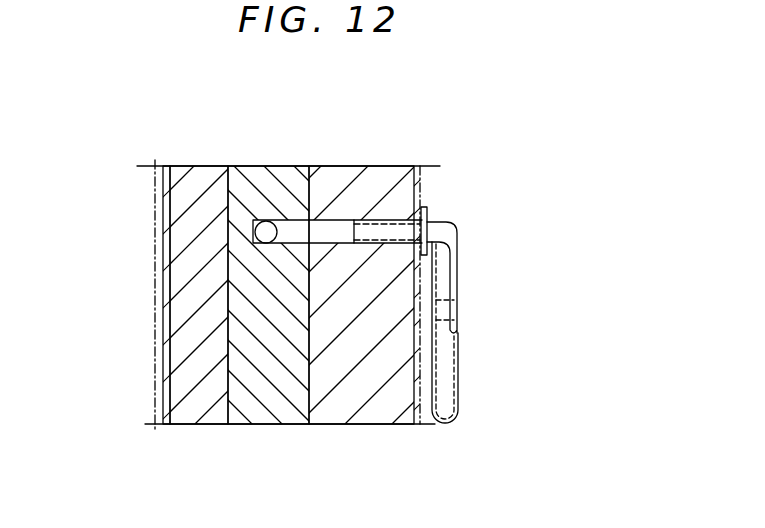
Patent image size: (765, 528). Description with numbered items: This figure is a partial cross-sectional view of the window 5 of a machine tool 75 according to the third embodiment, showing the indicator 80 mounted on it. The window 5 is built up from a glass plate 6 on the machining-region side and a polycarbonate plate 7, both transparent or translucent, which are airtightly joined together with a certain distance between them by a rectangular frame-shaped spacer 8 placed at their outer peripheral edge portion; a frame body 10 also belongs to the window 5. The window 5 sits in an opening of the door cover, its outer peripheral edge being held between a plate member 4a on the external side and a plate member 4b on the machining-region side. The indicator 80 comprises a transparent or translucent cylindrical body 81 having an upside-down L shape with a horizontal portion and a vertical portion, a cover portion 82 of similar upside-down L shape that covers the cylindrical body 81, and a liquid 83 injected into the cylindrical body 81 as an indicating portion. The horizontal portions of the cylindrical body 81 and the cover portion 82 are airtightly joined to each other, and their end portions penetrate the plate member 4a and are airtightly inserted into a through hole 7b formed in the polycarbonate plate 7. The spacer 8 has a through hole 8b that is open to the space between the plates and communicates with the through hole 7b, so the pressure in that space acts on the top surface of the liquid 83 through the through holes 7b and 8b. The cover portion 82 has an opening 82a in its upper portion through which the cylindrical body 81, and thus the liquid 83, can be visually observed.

The window 5 is at (329, 310).
The plate member 4a is at (420, 424).
The plate member 4b is at (155, 385).
The frame body 10 is at (164, 424).
The glass plate 6 is at (186, 424).
The spacer 8 is at (276, 308).
The through hole 8b is at (293, 226).
The polycarbonate plate 7 is at (356, 308).
The through hole 7b is at (336, 226).
The machine tool 75 is at (617, 219).
The indicator 80 is at (502, 320).
The cylindrical body 81 is at (430, 262).
The cover portion 82 is at (457, 392).
The opening 82a is at (462, 287).
The liquid 83 is at (455, 310).